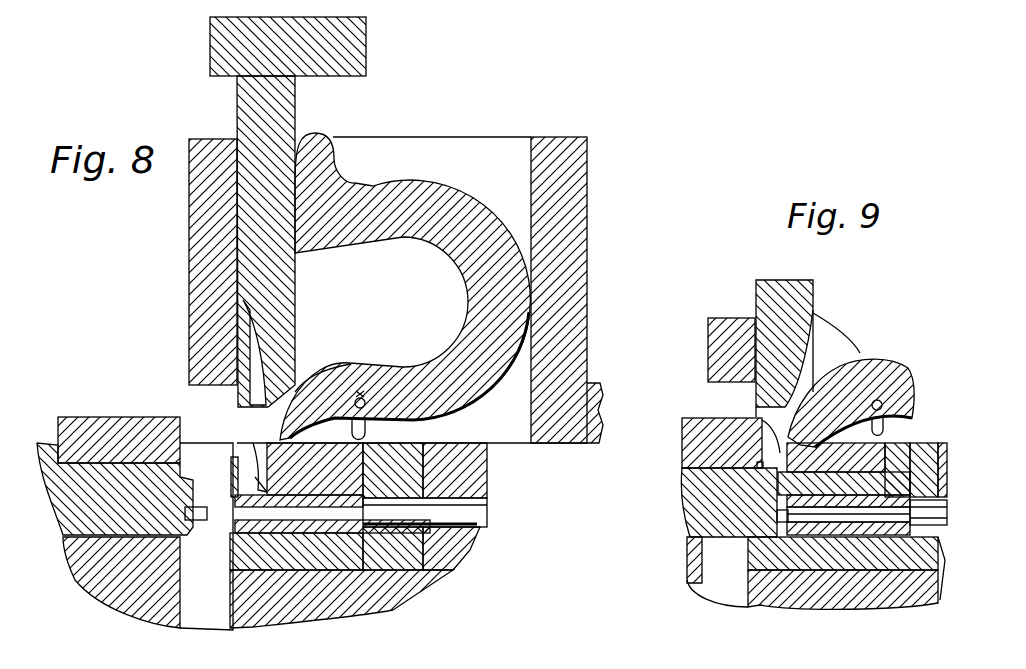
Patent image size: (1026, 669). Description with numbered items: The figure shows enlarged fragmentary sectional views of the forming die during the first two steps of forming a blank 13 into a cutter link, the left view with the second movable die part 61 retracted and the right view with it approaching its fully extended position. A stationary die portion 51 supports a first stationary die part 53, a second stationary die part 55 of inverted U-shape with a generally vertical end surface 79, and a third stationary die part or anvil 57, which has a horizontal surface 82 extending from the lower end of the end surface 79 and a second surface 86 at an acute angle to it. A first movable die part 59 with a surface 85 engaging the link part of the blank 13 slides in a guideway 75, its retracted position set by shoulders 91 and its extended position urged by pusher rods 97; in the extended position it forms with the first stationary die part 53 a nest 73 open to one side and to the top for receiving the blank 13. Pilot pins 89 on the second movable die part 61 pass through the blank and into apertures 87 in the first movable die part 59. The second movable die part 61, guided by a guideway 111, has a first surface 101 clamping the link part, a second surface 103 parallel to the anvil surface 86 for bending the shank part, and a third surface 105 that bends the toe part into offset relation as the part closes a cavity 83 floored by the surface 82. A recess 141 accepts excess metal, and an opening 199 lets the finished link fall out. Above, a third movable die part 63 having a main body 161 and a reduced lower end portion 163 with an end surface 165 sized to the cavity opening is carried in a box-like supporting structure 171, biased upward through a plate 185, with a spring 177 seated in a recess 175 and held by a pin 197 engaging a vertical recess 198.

In FIG. 8, the plate or arm 185 is at (317, 42).
In FIG. 8, the stationary supporting structure 171 is at (197, 235).
In FIG. 9, the stationary supporting structure 171 is at (730, 340).
In FIG. 8, the recess 175 is at (493, 157).
In FIG. 9, the recess 175 is at (823, 343).
In FIG. 8, the spring 177 is at (428, 190).
In FIG. 9, the spring 177 is at (900, 367).
In FIG. 8, the third movable die part 63 is at (280, 248).
In FIG. 9, the third movable die part 63 is at (778, 303).
In FIG. 8, the main body 161 is at (260, 277).
In FIG. 8, the lower end portion 163 is at (260, 360).
In FIG. 8, the end surface 165 is at (292, 373).
In FIG. 8, the pin 197 is at (383, 367).
In FIG. 9, the pin 197 is at (882, 398).
In FIG. 8, the vertical recess 198 is at (372, 407).
In FIG. 8, the end surface 79 is at (280, 405).
In FIG. 9, the end surface 79 is at (787, 455).
In FIG. 8, the second stationary die part 55 is at (382, 440).
In FIG. 9, the second stationary die part 55 is at (850, 435).
In FIG. 8, the third stationary die part or anvil 57 is at (348, 485).
In FIG. 9, the third stationary die part or anvil 57 is at (900, 433).
In FIG. 8, the recess 141 is at (119, 440).
In FIG. 8, the second movable die part 61 is at (57, 490).
In FIG. 9, the second movable die part 61 is at (697, 497).
In FIG. 8, the second surface 103 is at (145, 478).
In FIG. 8, the surface 85 is at (187, 505).
In FIG. 9, the surface 85 is at (777, 495).
In FIG. 8, the blank 13 is at (185, 513).
In FIG. 8, the first surface 101 is at (167, 555).
In FIG. 8, the pilot pins 89 is at (170, 577).
In FIG. 9, the pilot pins 89 is at (777, 515).
In FIG. 8, the guideway 111 is at (57, 567).
In FIG. 8, the nest 73 is at (213, 523).
In FIG. 8, the opening 199 is at (193, 627).
In FIG. 9, the opening 199 is at (713, 563).
In FIG. 8, the third surface 105 is at (177, 430).
In FIG. 8, the cavity 83 is at (253, 443).
In FIG. 9, the cavity 83 is at (762, 420).
In FIG. 8, the surface 82 is at (253, 460).
In FIG. 9, the surface 82 is at (867, 515).
In FIG. 8, the second surface 86 is at (315, 469).
In FIG. 9, the second surface 86 is at (732, 481).
In FIG. 8, the pusher rods or pins 97 is at (473, 507).
In FIG. 9, the pusher rods or pins 97 is at (915, 573).
In FIG. 8, the guideway 75 is at (296, 551).
In FIG. 8, the shoulders 91 is at (455, 540).
In FIG. 9, the shoulders 91 is at (905, 552).
In FIG. 8, the apertures or pilot pin holes 87 is at (341, 599).
In FIG. 8, the first movable die part 59 is at (335, 508).
In FIG. 9, the first movable die part 59 is at (843, 553).
In FIG. 8, the first stationary die part 53 is at (430, 568).
In FIG. 9, the first stationary die part 53 is at (843, 589).
In FIG. 8, the stationary die portion 51 is at (397, 588).
In FIG. 9, the stationary die portion 51 is at (787, 593).